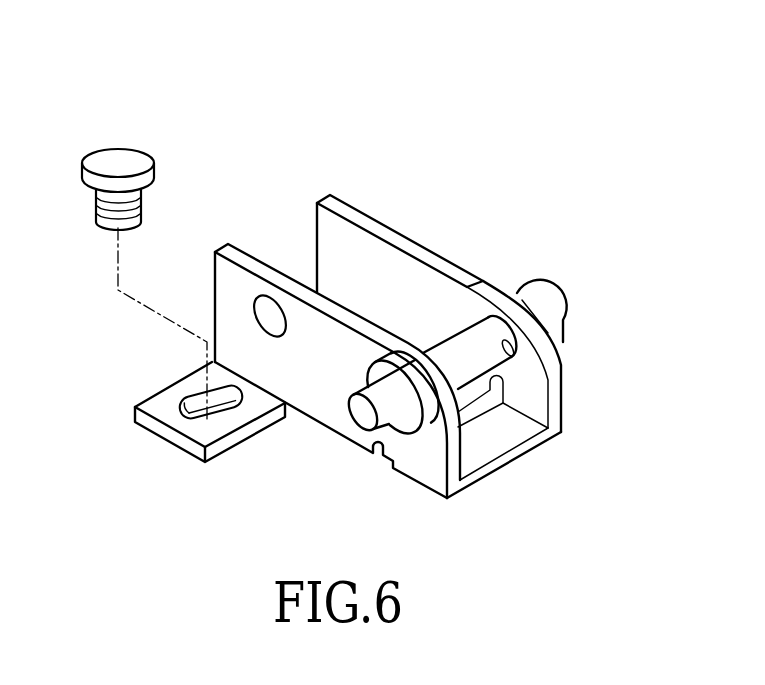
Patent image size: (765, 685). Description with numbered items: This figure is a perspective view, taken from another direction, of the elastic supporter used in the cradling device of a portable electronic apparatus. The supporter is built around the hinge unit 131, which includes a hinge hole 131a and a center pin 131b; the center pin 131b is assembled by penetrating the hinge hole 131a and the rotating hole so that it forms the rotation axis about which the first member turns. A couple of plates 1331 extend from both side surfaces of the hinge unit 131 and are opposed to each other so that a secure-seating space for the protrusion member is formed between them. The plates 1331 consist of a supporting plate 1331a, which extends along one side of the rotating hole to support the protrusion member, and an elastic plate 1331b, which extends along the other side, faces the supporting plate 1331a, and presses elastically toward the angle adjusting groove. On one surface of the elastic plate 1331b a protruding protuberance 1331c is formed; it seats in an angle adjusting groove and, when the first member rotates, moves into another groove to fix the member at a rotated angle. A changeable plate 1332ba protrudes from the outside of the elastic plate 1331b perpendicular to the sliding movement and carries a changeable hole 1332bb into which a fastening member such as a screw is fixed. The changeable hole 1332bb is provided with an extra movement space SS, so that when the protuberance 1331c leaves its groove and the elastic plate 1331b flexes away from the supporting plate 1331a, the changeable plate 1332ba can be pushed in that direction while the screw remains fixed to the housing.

The plates 1331 is at (373, 83).
The supporting plate 1331a is at (360, 220).
The elastic plate 1331b is at (230, 250).
The protruding protuberance 1331c is at (272, 312).
The hinge unit 131 is at (703, 307).
The hinge hole 131a is at (505, 372).
The center pin 131b is at (552, 303).
The changeable plate 1332ba is at (170, 433).
The changeable hole 1332bb is at (227, 412).
The extra movement space SS is at (202, 413).